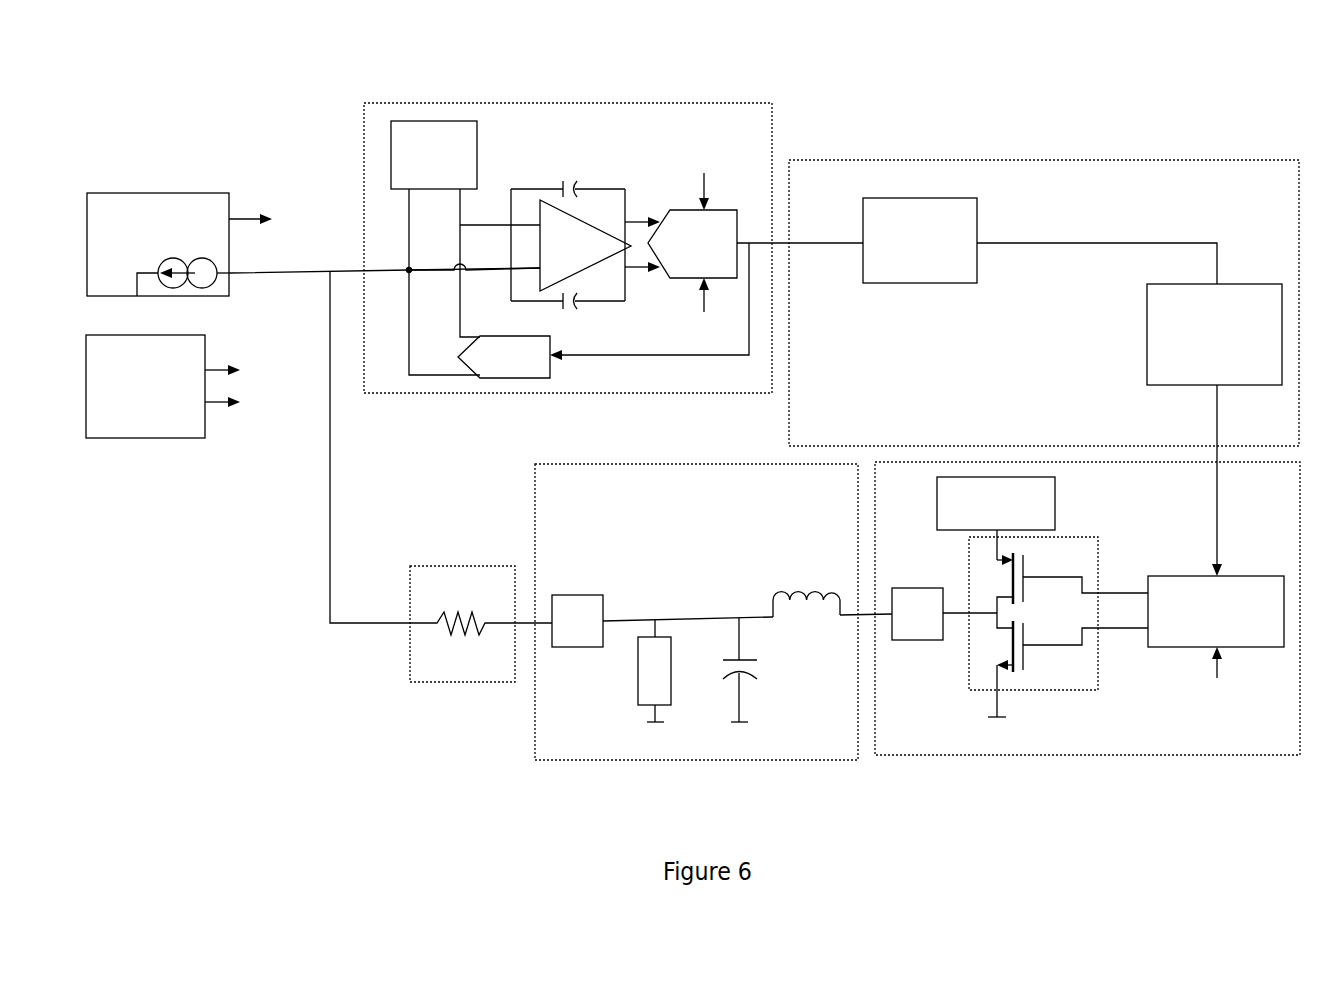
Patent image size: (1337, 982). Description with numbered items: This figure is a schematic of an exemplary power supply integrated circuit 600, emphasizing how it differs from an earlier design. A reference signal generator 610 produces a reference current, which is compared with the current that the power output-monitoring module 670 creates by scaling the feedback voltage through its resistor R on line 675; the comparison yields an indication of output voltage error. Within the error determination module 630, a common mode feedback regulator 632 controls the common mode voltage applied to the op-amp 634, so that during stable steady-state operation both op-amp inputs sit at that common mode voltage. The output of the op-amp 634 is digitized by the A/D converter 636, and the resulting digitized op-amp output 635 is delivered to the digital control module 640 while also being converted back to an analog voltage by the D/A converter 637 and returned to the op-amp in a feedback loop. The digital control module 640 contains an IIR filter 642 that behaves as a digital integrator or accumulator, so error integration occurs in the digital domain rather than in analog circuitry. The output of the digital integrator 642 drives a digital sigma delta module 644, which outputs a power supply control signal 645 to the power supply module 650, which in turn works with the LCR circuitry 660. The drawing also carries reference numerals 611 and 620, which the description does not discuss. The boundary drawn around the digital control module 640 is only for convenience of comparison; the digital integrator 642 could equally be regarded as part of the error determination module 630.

The power supply integrated circuit 600 is at (166, 89).
The reference signal generator 610 is at (124, 193).
The reference signal line 611 is at (318, 270).
The oscillator module 620 is at (148, 438).
The error determination module 630 is at (572, 103).
The common mode feedback regulator 632 is at (432, 121).
The op-amp 634 is at (534, 245).
The digitized op-amp output 635 is at (757, 242).
The A/D converter 636 is at (658, 214).
The D/A converter 637 is at (503, 378).
The digital control module 640 is at (1059, 160).
The IIR filter 642 is at (913, 283).
The digital sigma delta module 644 is at (1147, 334).
The power supply control signal 645 is at (1217, 420).
The power supply module 650 is at (1075, 755).
The LCR circuitry 660 is at (647, 464).
The power output-monitoring module 670 is at (462, 566).
The line 675 is at (330, 512).